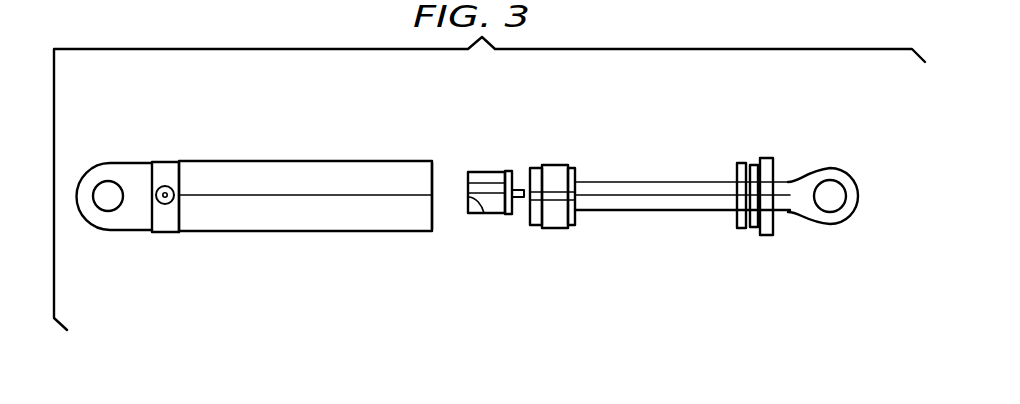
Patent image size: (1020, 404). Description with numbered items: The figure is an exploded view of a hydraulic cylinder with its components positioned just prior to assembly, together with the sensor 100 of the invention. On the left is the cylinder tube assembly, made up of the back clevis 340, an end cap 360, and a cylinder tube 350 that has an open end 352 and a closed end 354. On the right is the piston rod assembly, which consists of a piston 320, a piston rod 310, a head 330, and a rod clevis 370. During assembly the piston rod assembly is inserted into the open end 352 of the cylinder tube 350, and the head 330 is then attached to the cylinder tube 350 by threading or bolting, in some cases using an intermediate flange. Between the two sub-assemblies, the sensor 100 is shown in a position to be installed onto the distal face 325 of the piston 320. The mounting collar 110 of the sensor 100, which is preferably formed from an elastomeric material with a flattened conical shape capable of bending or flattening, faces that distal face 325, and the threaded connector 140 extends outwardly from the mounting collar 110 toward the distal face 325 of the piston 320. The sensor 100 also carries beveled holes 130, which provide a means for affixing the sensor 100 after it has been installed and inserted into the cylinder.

The sensor 100 is at (488, 222).
The mounting collar 110 is at (508, 170).
The beveled holes 130 is at (472, 213).
The threaded connector 140 is at (518, 186).
The piston rod 310 is at (648, 190).
The piston 320 is at (553, 174).
The distal face 325 is at (531, 218).
The head 330 is at (765, 160).
The back clevis 340 is at (120, 220).
The cylinder tube 350 is at (327, 170).
The open end 352 is at (423, 175).
The closed end 354 is at (179, 163).
The end cap 360 is at (165, 168).
The rod clevis 370 is at (840, 178).